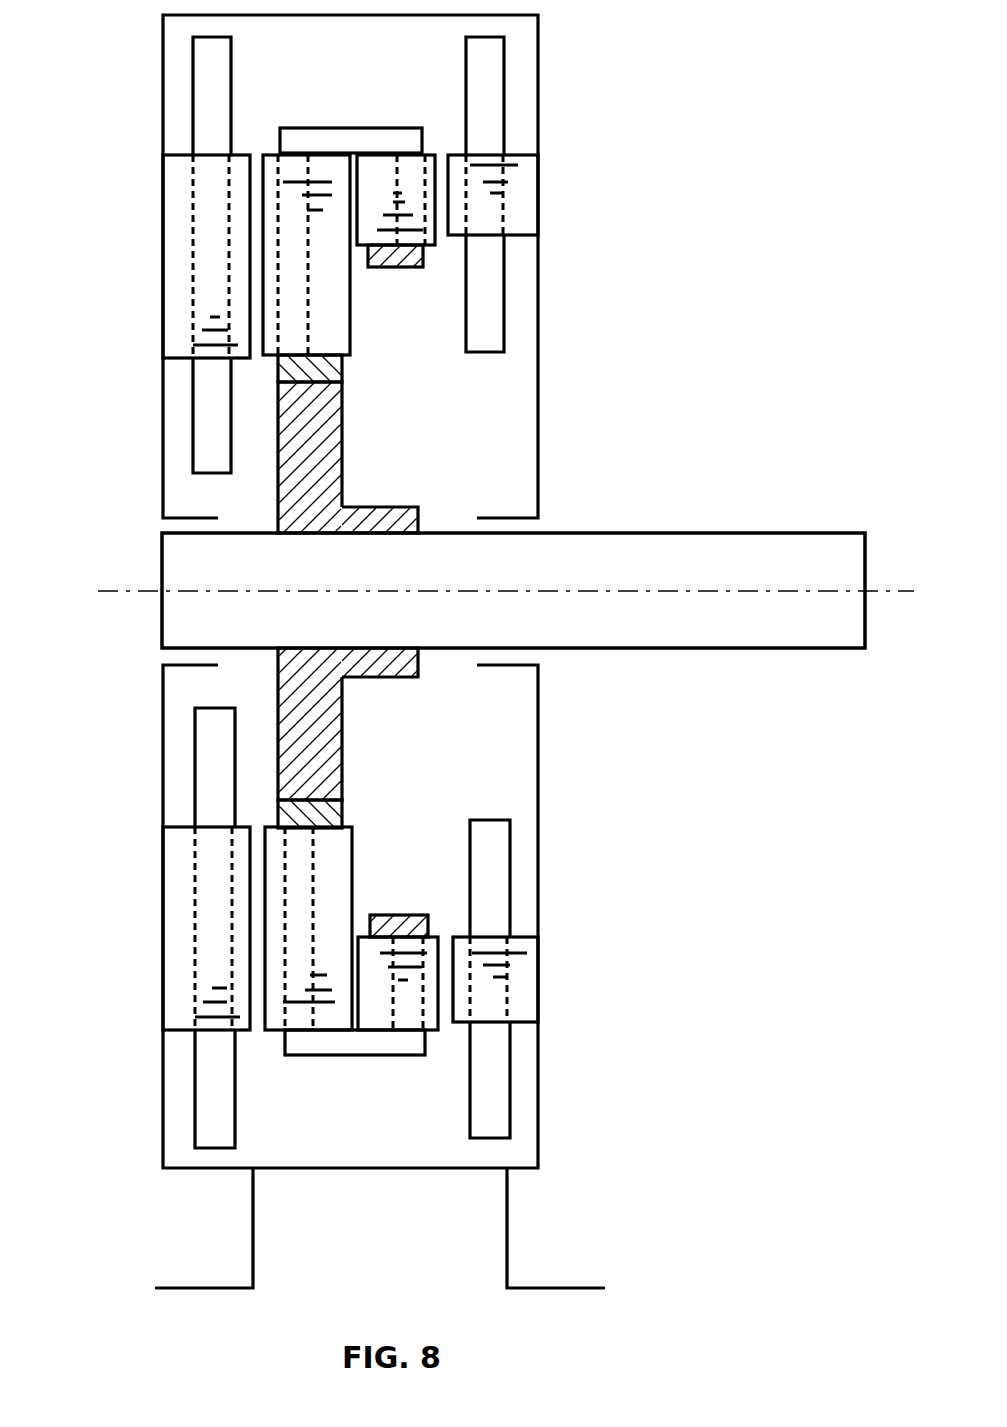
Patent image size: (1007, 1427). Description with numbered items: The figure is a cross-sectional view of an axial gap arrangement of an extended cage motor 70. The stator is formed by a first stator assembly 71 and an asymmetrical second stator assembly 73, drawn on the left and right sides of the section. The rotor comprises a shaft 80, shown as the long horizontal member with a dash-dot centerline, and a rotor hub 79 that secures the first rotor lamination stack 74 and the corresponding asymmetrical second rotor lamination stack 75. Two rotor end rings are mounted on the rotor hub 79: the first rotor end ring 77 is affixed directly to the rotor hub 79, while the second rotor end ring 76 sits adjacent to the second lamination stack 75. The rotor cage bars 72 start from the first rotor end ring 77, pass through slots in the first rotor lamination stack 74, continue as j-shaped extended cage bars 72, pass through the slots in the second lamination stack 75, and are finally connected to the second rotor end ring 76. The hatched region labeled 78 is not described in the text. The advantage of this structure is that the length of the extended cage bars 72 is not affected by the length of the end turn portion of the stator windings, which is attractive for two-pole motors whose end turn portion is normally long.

The extended cage motor 70 is at (800, 133).
The first stator assembly 71 is at (152, 177).
The rotor cage bars 72 is at (355, 137).
The asymmetrical second stator assembly 73 is at (556, 177).
The first rotor lamination stack 74 is at (318, 294).
The asymmetrical second rotor lamination stack 75 is at (411, 189).
The second rotor end ring 76 is at (388, 262).
The first rotor end ring 77 is at (339, 371).
The armature 78 is at (324, 455).
The rotor hub 79 is at (377, 506).
The shaft 80 is at (838, 575).